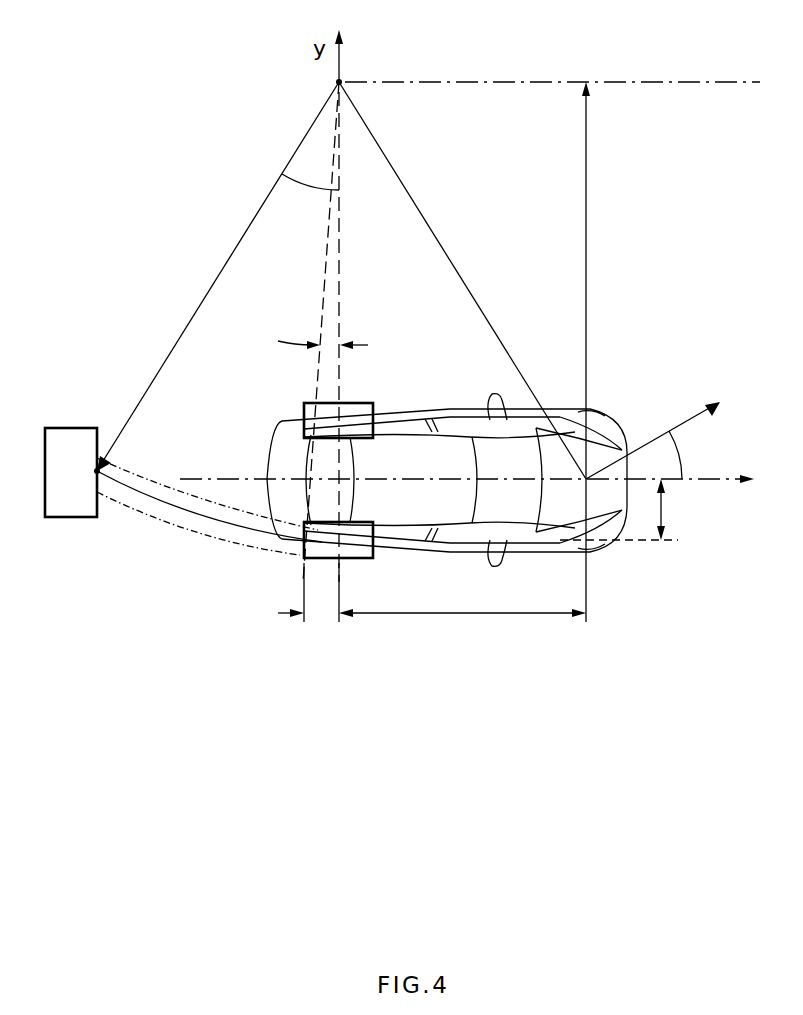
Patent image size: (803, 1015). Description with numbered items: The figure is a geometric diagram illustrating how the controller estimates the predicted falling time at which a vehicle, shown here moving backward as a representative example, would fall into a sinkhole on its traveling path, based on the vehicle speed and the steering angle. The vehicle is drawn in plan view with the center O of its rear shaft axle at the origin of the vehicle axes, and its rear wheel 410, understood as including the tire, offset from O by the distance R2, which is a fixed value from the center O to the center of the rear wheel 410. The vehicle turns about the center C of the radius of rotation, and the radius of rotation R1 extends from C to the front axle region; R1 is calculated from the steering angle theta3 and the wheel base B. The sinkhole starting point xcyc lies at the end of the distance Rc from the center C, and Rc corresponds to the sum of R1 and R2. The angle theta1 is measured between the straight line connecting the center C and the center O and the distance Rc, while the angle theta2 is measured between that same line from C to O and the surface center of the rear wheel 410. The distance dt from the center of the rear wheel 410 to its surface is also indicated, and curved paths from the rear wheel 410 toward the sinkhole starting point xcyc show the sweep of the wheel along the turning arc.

The rear wheel 410 is at (304, 557).
The center of the radius of rotation C is at (548, 70).
The center of a rear shaft axle of the vehicle O is at (467, 495).
The distance from the center of the radius of rotation to the starting point of the Rc is at (218, 276).
The radius of rotation of the vehicle R1 is at (598, 352).
The distance from the center of the rear shaft axle to the center of the rear wheel R2 is at (629, 509).
The angle between the line connecting C and O and the distance Rc theta1 is at (310, 197).
The angle between the line connecting C and O and the surface center of the rear whe theta2 is at (322, 332).
The steering angle of the vehicle theta3 is at (653, 440).
The starting point of the sinkhole xcyc is at (97, 471).
The distance from the center of the rear wheel to a surface of the rear wheel dt is at (303, 592).
The wheel base B is at (462, 592).